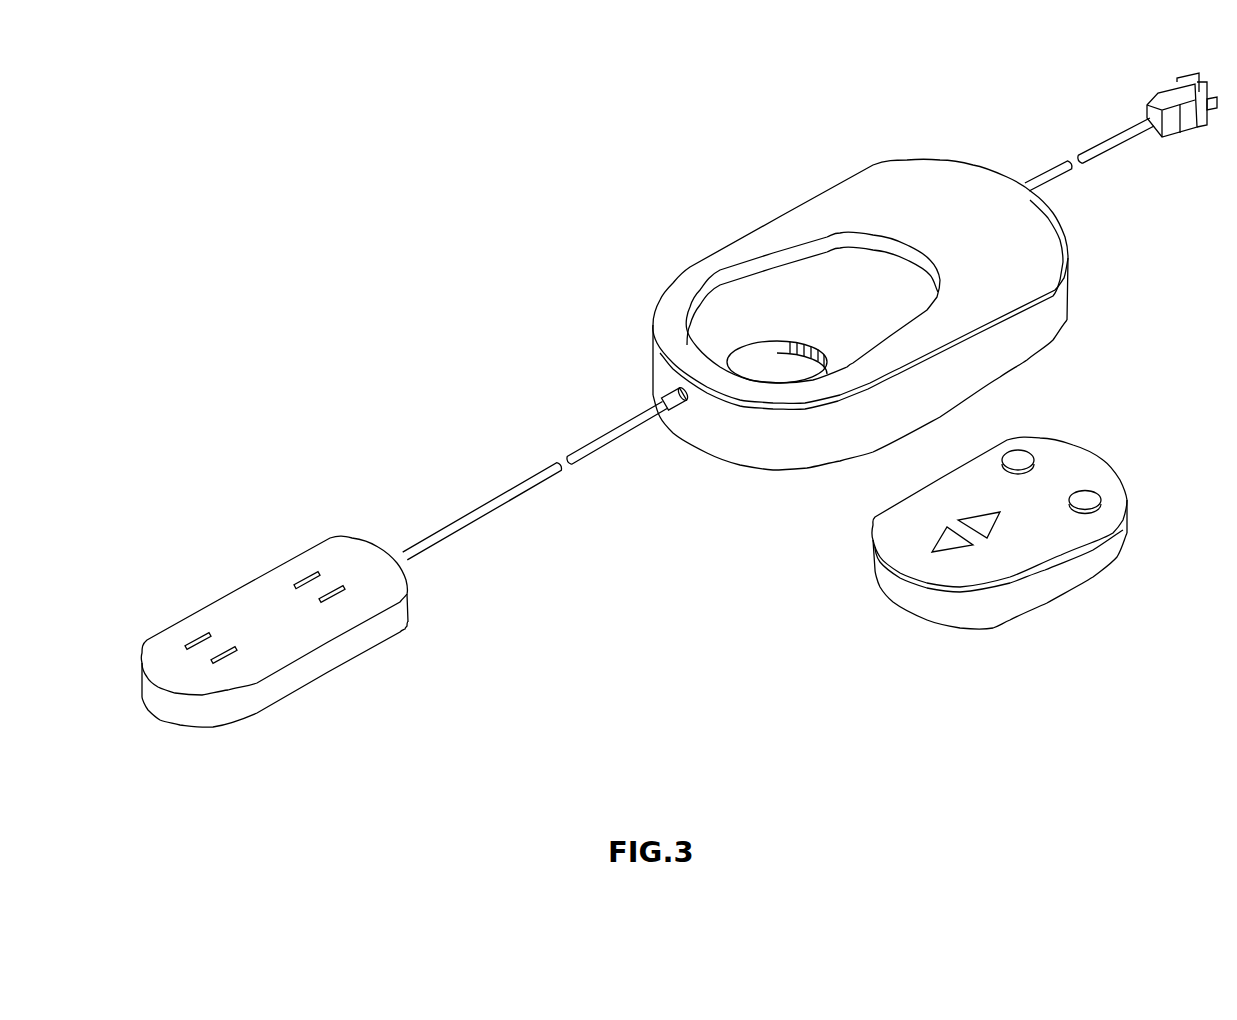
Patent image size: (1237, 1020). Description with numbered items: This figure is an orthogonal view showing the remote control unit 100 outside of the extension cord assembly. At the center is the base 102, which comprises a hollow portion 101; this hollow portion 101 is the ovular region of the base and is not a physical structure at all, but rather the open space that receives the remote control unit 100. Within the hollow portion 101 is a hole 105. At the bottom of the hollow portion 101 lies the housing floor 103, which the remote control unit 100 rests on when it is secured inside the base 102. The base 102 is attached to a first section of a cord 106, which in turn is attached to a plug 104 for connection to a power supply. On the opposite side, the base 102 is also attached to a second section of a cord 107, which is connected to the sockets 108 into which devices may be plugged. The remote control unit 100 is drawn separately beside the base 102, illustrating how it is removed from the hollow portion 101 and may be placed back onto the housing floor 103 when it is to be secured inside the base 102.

The remote control unit 100 is at (881, 595).
The hollow portion 101 is at (893, 267).
The base 102 is at (740, 448).
The housing floor 103 is at (853, 297).
The plug 104 is at (1140, 108).
The hole 105 is at (773, 372).
The first section of a cord 106 is at (1057, 183).
The second section of a cord 107 is at (530, 487).
The sockets 108 is at (409, 600).